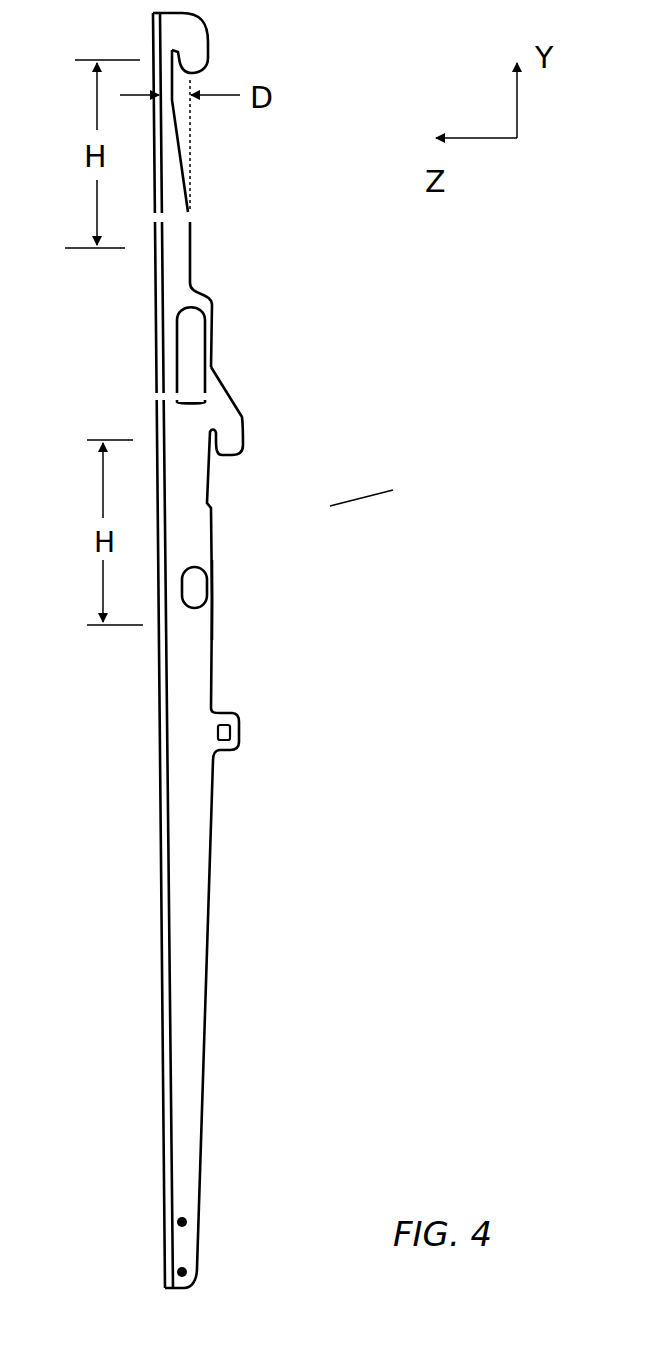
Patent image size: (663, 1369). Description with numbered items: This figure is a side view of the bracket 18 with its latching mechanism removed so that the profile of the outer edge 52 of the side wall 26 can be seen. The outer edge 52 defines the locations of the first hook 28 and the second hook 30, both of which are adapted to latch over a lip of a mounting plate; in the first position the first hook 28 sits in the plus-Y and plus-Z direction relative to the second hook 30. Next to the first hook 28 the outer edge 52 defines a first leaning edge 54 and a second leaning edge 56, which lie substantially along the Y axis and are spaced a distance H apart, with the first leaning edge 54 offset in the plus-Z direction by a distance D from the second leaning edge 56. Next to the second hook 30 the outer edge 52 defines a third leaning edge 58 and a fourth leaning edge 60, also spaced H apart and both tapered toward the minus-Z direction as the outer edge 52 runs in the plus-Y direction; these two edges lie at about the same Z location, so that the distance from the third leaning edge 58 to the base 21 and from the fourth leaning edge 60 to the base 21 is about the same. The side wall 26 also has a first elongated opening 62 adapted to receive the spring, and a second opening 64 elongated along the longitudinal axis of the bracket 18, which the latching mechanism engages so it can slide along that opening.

The bracket 18 is at (288, 517).
The base 21 is at (167, 1033).
The side wall 26 is at (193, 822).
The first hook 28 is at (190, 50).
The second hook 30 is at (233, 430).
The outer edge 52 is at (213, 658).
The first leaning edge 54 is at (173, 63).
The second leaning edge 56 is at (192, 250).
The third leaning edge 58 is at (213, 448).
The fourth leaning edge 60 is at (213, 603).
The first elongated opening 62 is at (185, 357).
The second opening 64 is at (190, 587).